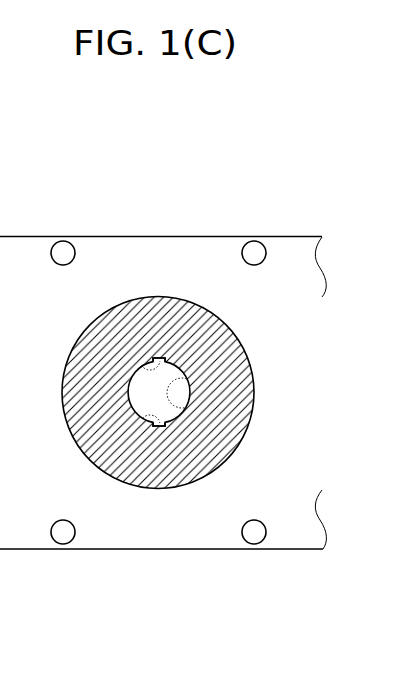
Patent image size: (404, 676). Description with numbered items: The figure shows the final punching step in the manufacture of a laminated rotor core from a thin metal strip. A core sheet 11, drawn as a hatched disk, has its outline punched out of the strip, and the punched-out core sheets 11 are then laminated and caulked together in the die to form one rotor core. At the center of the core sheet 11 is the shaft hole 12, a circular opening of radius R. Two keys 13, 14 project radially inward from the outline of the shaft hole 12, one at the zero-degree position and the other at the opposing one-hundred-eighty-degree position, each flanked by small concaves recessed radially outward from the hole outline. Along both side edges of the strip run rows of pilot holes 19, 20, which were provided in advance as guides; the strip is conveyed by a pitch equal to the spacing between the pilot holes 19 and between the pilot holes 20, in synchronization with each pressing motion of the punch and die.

The core sheet 11 is at (237, 335).
The shaft hole 12 is at (197, 372).
The key 13 is at (148, 360).
The key 14 is at (134, 424).
The pilot hole 19 is at (62, 243).
The pilot hole 20 is at (255, 250).